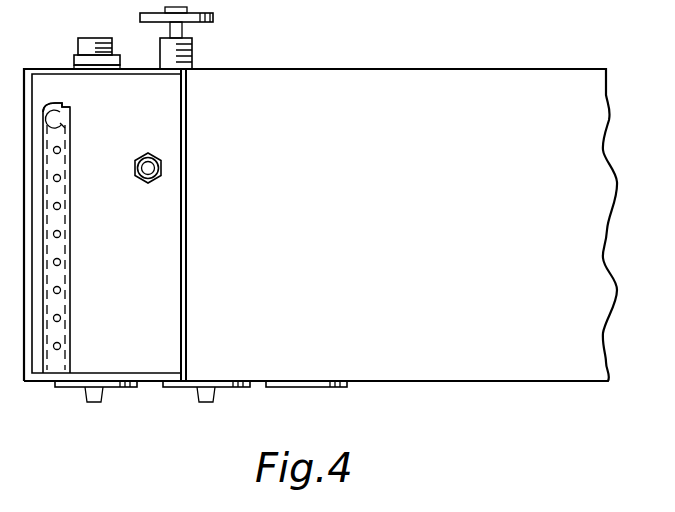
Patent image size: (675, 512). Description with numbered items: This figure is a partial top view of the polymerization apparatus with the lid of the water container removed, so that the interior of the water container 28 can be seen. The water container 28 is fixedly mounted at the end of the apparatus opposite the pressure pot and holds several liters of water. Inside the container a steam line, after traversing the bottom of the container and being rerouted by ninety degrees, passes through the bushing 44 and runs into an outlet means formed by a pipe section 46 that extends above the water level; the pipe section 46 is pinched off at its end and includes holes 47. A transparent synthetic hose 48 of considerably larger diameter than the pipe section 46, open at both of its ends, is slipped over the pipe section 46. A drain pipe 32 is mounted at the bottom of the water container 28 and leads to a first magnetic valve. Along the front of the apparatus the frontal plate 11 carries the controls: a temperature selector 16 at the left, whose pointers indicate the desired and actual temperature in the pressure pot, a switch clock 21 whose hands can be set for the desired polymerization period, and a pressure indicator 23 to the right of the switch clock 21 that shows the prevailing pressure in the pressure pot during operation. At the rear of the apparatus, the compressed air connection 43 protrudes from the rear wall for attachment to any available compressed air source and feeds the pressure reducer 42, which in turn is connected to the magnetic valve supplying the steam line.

The frontal plate 11 is at (424, 383).
The temperature selector 16 is at (80, 396).
The switch clock 21 is at (188, 396).
The pressure indicator 23 is at (305, 396).
The water container 28 is at (186, 243).
The drain pipe 32 is at (162, 168).
The pressure reducer 42 is at (195, 50).
The compressed air connection 43 is at (78, 44).
The bushing 44 is at (70, 107).
The pipe section 46 is at (62, 128).
The holes 47 is at (60, 234).
The transparent synthetic hose 48 is at (57, 190).